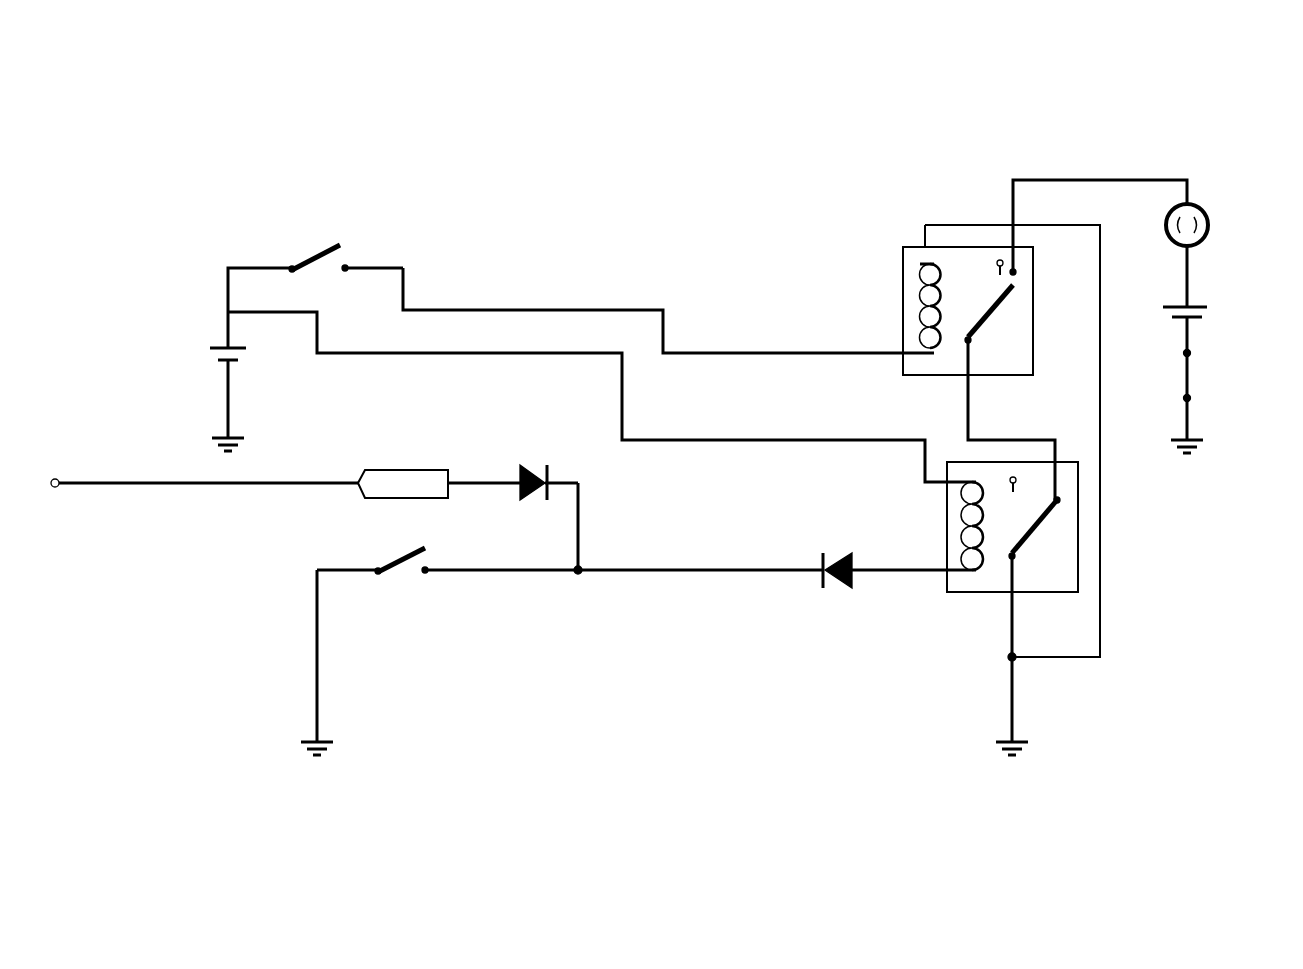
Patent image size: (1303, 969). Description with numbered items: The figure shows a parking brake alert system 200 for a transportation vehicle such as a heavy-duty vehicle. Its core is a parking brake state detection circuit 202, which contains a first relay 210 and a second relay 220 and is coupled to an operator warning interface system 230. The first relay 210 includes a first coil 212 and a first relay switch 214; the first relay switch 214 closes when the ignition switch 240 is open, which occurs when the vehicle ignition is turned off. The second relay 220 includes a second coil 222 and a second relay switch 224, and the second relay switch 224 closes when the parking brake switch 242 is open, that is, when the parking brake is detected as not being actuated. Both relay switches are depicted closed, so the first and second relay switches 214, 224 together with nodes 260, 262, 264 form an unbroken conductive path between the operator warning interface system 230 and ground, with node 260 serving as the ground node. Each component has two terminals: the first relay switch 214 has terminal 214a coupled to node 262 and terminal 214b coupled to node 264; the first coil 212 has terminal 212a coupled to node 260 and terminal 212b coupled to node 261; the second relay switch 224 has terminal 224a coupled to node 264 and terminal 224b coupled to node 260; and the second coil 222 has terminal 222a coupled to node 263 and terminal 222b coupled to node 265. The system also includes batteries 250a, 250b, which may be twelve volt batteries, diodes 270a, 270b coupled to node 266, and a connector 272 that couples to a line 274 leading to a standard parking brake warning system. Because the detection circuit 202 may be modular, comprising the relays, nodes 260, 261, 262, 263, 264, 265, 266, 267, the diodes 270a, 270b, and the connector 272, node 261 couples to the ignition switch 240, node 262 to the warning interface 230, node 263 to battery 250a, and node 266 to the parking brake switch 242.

The parking brake alert system 200 is at (677, 461).
The parking brake state detection circuit 202 is at (720, 166).
The first relay 210 is at (903, 268).
The first coil 212 is at (925, 315).
The terminal 212a is at (930, 263).
The terminal 212b is at (890, 353).
The first relay switch 214 is at (993, 315).
The terminal 214a is at (1013, 270).
The terminal 214b is at (965, 347).
The second relay 220 is at (955, 462).
The second coil 222 is at (967, 523).
The terminal 222a is at (962, 485).
The terminal 222b is at (937, 572).
The second relay switch 224 is at (1042, 523).
The terminal 224a is at (1063, 485).
The terminal 224b is at (1013, 580).
The operator warning interface system 230 is at (1207, 207).
The ignition switch 240 is at (332, 247).
The parking brake switch 242 is at (407, 555).
The battery 250a is at (215, 348).
The battery 250b is at (1210, 307).
The ground node 260 is at (1012, 657).
The node 261 is at (647, 307).
The node 262 is at (1035, 180).
The node 263 is at (647, 437).
The node 264 is at (1013, 440).
The node 265 is at (888, 572).
The node 266 is at (308, 618).
The node 267 is at (485, 485).
The diode 270a is at (843, 552).
The diode 270b is at (528, 468).
The connector 272 is at (420, 470).
The line 274 is at (150, 483).